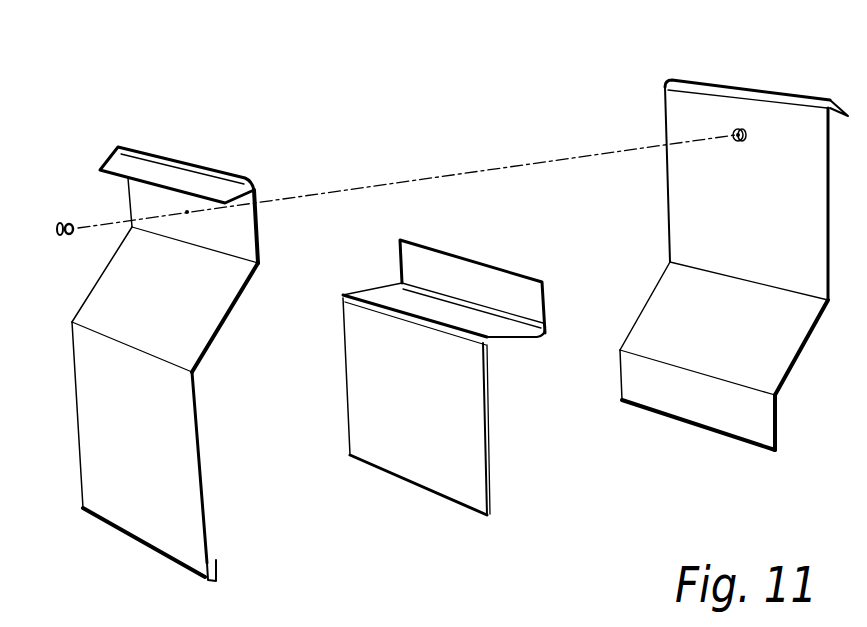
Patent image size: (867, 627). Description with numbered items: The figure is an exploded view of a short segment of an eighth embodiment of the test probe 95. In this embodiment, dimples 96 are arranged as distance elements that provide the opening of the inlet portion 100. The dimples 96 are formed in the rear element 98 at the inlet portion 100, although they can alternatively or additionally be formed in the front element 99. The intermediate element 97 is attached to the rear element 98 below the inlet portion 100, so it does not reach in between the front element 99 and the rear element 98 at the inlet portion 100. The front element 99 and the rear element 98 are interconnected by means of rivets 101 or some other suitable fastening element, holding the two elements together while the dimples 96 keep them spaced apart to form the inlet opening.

The test probe 95 is at (304, 130).
The dimples 96 is at (730, 128).
The intermediate element 97 is at (477, 270).
The rear element 98 is at (686, 205).
The front element 99 is at (108, 295).
The inlet portion 100 is at (233, 215).
The rivets 101 is at (61, 221).